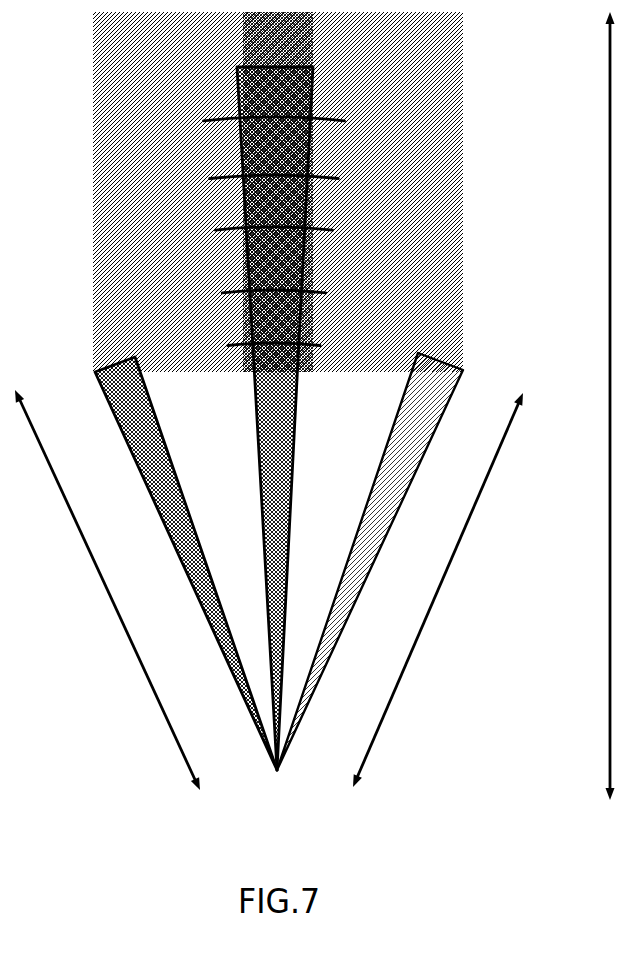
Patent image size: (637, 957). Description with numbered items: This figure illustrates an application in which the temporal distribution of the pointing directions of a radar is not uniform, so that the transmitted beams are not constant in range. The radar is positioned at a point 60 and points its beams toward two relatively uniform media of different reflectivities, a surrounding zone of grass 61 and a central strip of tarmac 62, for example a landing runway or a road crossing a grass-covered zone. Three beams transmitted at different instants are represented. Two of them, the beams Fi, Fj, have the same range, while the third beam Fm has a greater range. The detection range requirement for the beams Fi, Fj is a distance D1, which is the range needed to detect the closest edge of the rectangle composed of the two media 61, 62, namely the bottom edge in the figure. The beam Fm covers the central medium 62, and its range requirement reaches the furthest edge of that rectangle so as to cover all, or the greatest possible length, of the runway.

The point 60 is at (275, 776).
The grass 61 is at (420, 288).
The tarmac 62 is at (315, 42).
The third beam Fm is at (300, 463).
The beam Fi is at (432, 433).
The beam Fj is at (157, 526).
The distance D1 is at (269, 590).